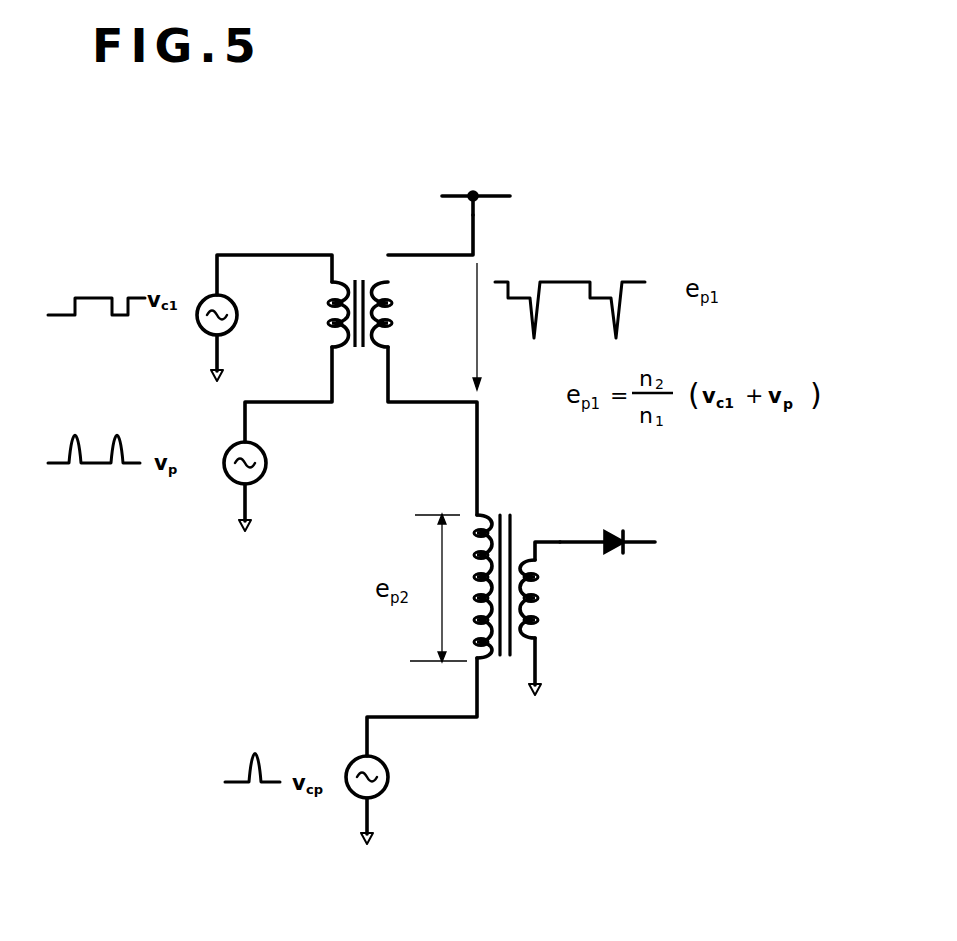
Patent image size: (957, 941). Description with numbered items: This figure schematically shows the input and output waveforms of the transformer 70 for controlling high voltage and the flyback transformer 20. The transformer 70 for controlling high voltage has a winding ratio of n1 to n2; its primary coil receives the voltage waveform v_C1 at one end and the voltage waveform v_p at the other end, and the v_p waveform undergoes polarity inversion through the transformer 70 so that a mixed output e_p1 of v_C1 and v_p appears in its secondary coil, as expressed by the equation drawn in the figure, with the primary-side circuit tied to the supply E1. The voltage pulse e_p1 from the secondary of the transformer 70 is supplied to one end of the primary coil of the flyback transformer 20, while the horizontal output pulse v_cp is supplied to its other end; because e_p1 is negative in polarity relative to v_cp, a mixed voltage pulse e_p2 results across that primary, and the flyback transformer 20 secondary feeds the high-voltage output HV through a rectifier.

The transformer for controlling high voltage 70 is at (355, 255).
The flyback transformer 20 is at (510, 500).
The power supply voltage terminal E1 is at (476, 186).
The primary winding of transformer 70 n1 is at (312, 314).
The secondary winding of transformer 70 n2 is at (404, 314).
The high-voltage output with rectifier diode HV is at (638, 543).